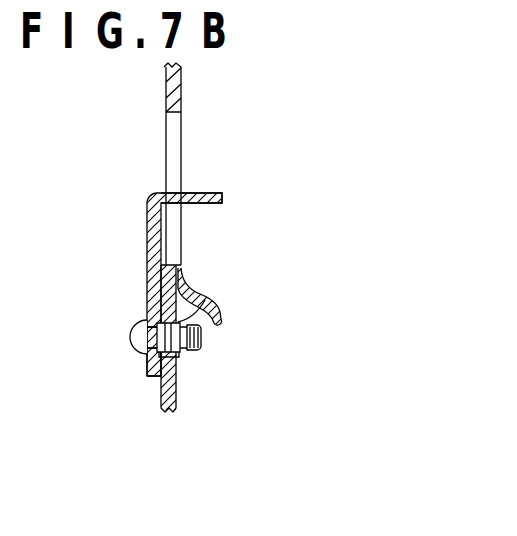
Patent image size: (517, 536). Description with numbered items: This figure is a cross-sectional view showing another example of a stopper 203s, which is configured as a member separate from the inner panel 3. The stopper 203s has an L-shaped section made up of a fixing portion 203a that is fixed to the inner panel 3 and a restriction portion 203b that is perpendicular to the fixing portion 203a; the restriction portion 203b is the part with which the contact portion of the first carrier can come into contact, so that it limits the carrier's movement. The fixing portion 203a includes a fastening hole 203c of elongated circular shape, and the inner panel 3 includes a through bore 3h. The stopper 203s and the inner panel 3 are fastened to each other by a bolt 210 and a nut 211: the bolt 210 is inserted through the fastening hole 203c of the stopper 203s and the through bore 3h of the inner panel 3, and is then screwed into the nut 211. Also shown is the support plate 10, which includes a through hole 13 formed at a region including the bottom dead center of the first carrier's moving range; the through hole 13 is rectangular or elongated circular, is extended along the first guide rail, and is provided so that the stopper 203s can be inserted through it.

The inner panel 3 is at (177, 386).
The through bore 3h is at (177, 358).
The support plate 10 is at (182, 73).
The through hole 13 is at (182, 118).
The fixing portion 203a is at (150, 364).
The restriction portion 203b is at (209, 192).
The fastening hole 203c is at (141, 319).
The stopper 203s is at (146, 236).
The bolt 210 is at (134, 338).
The nut 211 is at (212, 302).